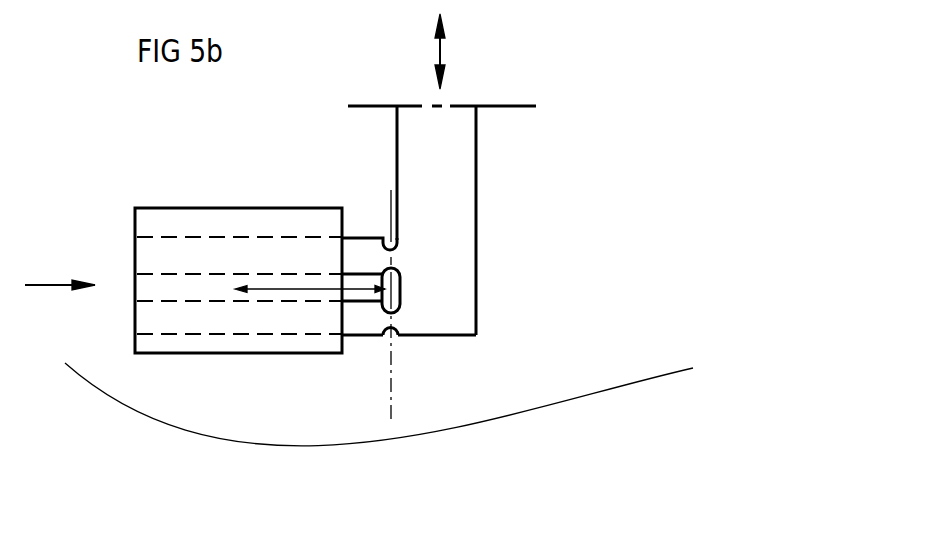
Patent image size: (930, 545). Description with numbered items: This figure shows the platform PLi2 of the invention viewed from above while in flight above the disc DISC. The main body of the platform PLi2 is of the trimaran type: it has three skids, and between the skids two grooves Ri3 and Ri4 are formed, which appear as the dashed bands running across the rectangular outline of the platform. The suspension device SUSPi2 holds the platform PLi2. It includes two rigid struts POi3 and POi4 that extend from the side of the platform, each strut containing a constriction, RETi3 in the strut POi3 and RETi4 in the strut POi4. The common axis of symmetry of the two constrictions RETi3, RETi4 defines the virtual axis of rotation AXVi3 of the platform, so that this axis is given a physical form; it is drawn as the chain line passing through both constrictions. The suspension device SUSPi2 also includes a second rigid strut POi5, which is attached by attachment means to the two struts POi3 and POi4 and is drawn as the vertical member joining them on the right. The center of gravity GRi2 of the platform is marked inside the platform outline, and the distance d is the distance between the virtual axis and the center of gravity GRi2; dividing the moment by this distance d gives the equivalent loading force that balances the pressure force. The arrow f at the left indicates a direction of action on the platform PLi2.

The platform PLi2 is at (218, 208).
The groove Ri4 is at (172, 273).
The groove Ri3 is at (173, 333).
The center of gravity GRi2 is at (283, 288).
The distance d is at (310, 281).
The force direction f is at (60, 274).
The strut POi4 is at (357, 237).
The suspension device SUSPi2 is at (395, 258).
The constriction RETi4 is at (398, 257).
The second rigid strut POi5 is at (476, 278).
The strut POi3 is at (350, 337).
The constriction RETi3 is at (396, 322).
The virtual axis of rotation AXVi3 is at (391, 388).
The disc DISC is at (510, 380).